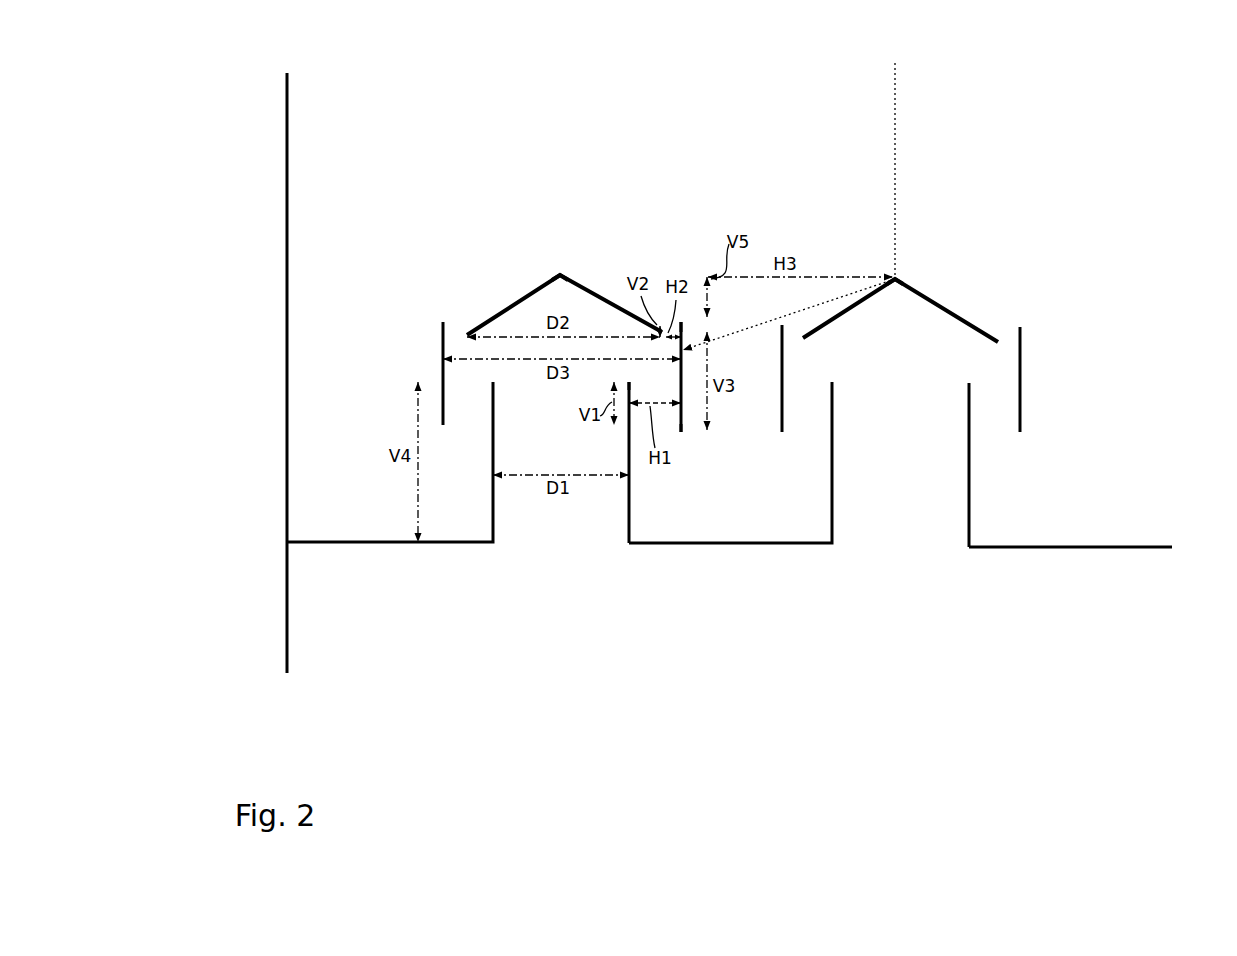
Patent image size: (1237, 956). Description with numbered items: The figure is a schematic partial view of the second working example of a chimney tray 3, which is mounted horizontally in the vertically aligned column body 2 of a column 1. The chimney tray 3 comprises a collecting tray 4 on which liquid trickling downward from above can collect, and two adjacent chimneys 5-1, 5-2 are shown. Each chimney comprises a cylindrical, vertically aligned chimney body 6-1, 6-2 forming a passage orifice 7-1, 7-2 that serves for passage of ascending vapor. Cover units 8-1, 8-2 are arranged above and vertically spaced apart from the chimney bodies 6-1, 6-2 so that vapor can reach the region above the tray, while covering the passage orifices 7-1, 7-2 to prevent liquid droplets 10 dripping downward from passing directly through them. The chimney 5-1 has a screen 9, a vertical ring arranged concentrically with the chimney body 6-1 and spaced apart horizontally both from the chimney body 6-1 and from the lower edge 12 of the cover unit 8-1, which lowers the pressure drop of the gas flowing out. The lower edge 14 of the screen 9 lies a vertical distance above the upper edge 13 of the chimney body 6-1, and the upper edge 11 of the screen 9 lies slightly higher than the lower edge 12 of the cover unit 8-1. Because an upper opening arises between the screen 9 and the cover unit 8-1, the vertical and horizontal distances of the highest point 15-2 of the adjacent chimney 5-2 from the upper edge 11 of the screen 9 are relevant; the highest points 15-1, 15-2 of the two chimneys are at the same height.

The column 1 is at (277, 367).
The column body 2 is at (287, 144).
The chimney tray 3 is at (1093, 444).
The collecting tray 4 is at (1093, 548).
The chimney 5-1 is at (513, 309).
The chimney 5-2 is at (927, 270).
The chimney body 6-1 is at (625, 520).
The chimney body 6-2 is at (963, 515).
The passage orifice 7-1 is at (576, 538).
The passage orifice 7-2 is at (913, 538).
The cover unit 8-1 is at (499, 307).
The cover unit 8-2 is at (958, 313).
The screen 9 is at (683, 402).
The liquid droplets 10 is at (808, 308).
The upper edge of the screen 11 is at (683, 320).
The lower edge of the cover unit 12 is at (443, 323).
The upper edge of the chimney body 13 is at (634, 380).
The lower edge of the screen 14 is at (683, 433).
The highest point of the chimney 15-1 is at (560, 273).
The highest point of the chimney 15-2 is at (898, 278).